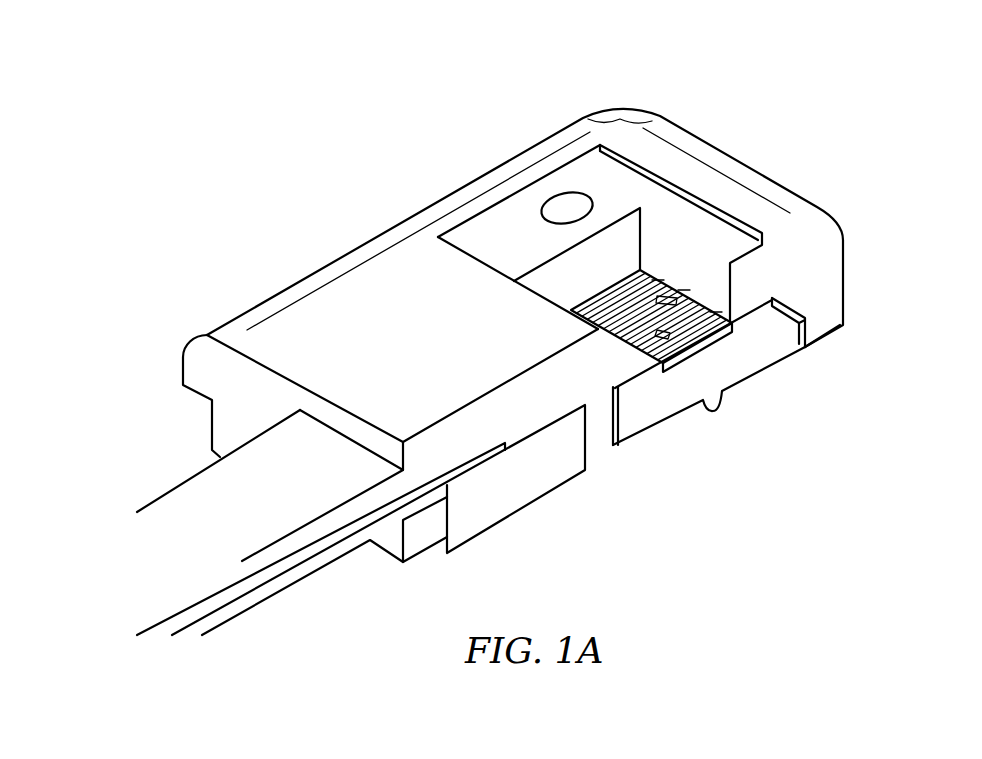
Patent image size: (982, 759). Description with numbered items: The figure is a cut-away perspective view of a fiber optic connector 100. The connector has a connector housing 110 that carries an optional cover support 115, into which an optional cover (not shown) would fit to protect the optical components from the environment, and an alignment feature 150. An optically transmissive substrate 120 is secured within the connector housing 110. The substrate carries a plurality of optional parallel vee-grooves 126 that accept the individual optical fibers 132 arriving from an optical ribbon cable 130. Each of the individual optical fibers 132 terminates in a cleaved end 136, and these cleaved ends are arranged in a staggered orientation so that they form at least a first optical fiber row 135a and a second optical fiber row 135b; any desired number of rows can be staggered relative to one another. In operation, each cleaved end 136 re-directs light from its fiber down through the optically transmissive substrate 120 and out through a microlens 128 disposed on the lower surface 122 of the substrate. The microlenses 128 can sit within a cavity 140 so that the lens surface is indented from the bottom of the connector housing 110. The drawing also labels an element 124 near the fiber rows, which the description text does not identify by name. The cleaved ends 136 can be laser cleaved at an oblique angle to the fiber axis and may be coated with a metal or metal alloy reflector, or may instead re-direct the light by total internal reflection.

The fiber optic connector 100 is at (256, 236).
The connector housing 110 is at (367, 283).
The cover support 115 is at (472, 238).
The optically transmissive substrate 120 is at (632, 420).
The lower surface 122 is at (786, 350).
The contact 124 is at (716, 312).
The parallel vee-grooves 126 is at (658, 280).
The microlens 128 is at (713, 398).
The optical ribbon cable 130 is at (287, 587).
The individual optical fibers 132 is at (600, 303).
The first optical fiber row 135a is at (676, 358).
The second optical fiber row 135b is at (675, 312).
The cleaved end 136 is at (684, 290).
The cavity 140 is at (792, 456).
The alignment feature 150 is at (562, 200).